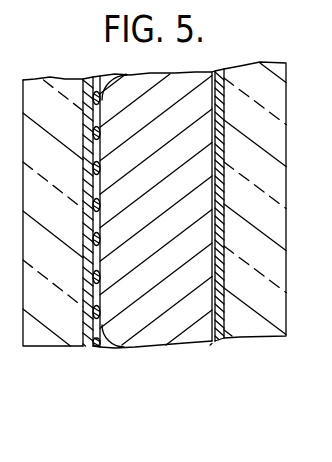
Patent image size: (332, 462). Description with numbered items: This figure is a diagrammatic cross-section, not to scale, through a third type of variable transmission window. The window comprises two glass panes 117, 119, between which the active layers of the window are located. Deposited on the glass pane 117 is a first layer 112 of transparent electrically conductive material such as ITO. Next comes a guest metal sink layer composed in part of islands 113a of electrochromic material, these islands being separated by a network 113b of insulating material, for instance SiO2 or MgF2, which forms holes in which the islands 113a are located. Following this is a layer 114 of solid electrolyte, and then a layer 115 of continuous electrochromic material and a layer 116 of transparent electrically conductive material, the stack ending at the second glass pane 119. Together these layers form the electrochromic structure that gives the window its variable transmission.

The first layer of transparent electrically conductive material 112 is at (84, 342).
The islands of electrochromic material 113a is at (119, 83).
The network of insulating material 113b is at (121, 344).
The layer of solid electrolyte 114 is at (178, 332).
The layer of continuous electrochromic material 115 is at (213, 71).
The layer of transparent electrically conductive material 116 is at (220, 70).
The glass pane 117 is at (48, 338).
The glass pane 119 is at (243, 330).